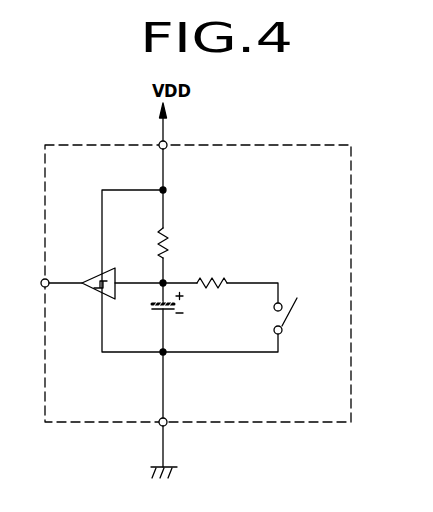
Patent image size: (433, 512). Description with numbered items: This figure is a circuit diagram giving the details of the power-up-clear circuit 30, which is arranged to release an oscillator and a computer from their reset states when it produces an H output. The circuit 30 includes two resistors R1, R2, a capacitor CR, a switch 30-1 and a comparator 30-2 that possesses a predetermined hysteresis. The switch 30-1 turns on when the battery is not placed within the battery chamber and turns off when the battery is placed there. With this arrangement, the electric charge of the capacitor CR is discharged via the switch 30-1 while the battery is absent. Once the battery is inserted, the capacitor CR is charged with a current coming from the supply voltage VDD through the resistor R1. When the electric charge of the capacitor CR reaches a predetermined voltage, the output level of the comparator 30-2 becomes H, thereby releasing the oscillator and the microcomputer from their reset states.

The power-up-clear circuit 30 is at (196, 262).
The switch 30-1 is at (291, 312).
The comparator 30-2 is at (93, 272).
The resistor R1 is at (157, 233).
The resistor R2 is at (210, 277).
The capacitor CR is at (178, 307).